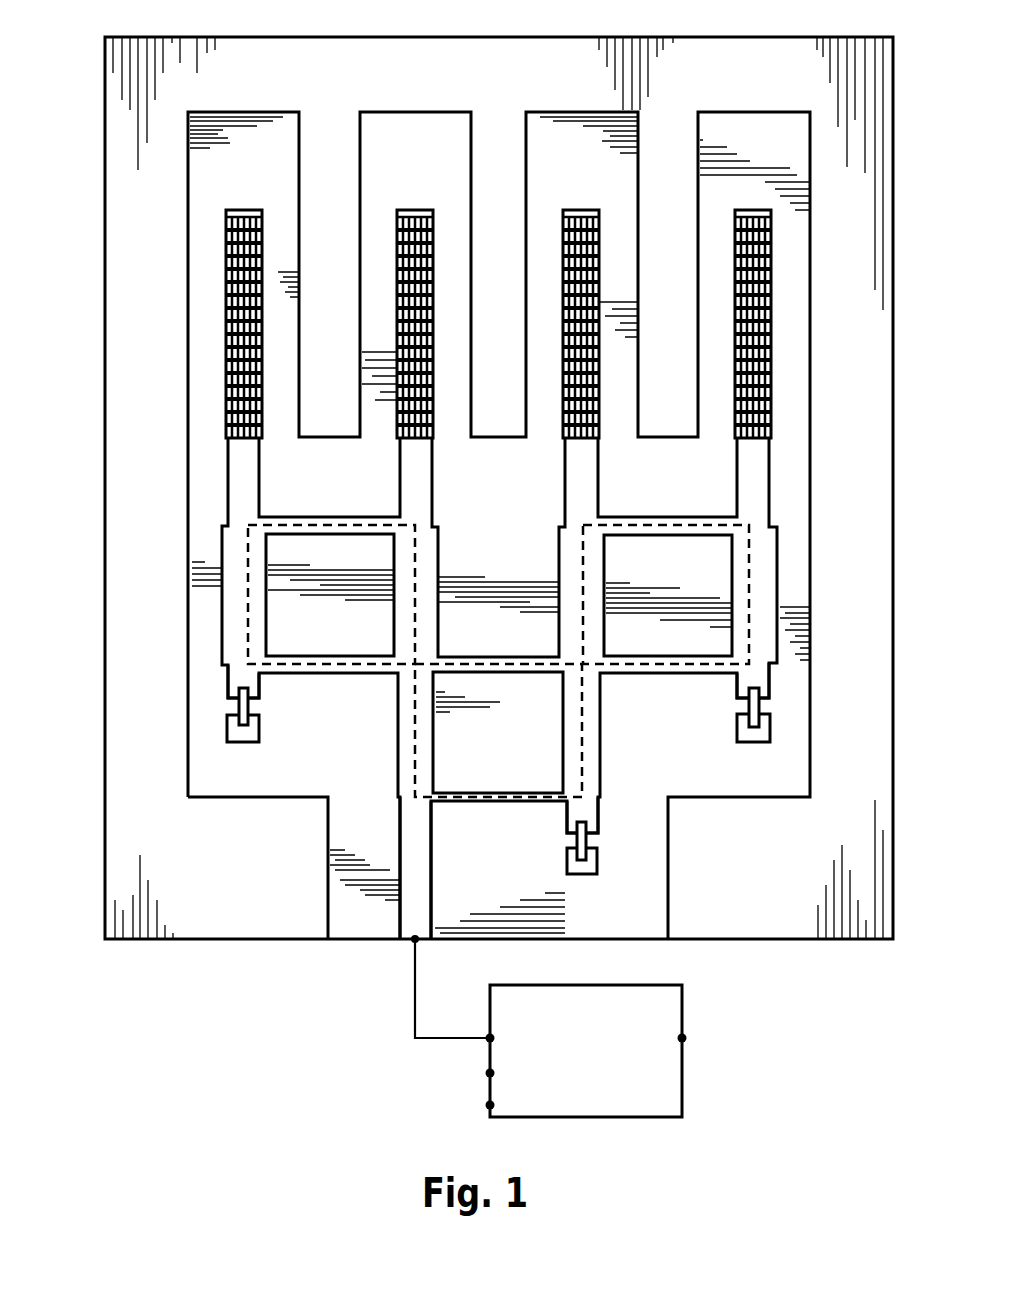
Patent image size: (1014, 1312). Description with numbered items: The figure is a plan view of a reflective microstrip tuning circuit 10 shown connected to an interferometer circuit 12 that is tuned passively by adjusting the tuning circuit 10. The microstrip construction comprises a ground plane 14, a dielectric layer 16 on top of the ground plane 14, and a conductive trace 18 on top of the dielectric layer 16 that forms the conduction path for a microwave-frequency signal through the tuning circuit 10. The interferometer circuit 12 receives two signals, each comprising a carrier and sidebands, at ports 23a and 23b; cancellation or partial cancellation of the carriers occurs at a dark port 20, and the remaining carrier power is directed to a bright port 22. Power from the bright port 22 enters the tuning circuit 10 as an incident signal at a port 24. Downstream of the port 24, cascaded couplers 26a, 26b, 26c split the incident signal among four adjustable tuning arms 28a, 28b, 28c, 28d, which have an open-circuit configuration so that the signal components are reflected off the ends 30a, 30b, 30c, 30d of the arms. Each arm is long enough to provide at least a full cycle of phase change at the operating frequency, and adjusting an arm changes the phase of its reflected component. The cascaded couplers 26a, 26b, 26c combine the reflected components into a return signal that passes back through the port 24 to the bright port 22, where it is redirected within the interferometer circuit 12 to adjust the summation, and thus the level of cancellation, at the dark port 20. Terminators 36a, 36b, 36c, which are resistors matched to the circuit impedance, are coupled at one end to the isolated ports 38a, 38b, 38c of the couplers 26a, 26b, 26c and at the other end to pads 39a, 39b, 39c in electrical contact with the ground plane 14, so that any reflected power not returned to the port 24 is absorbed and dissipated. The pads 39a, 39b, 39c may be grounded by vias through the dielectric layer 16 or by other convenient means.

The reflective microstrip tuning circuit 10 is at (74, 74).
The interferometer circuit 12 is at (572, 1052).
The ground plane 14 is at (120, 768).
The dielectric layer 16 is at (240, 795).
The conductive trace 18 is at (392, 872).
The dark port 20 is at (683, 1038).
The bright port 22 is at (488, 1040).
The port 23a is at (490, 1073).
The port 23b is at (490, 1105).
The port 24 is at (415, 944).
The cascaded coupler 26a is at (601, 748).
The cascaded coupler 26b is at (233, 597).
The cascaded coupler 26c is at (766, 598).
The adjustable tuning arm 28a is at (411, 190).
The adjustable tuning arm 28b is at (243, 190).
The adjustable tuning arm 28c is at (582, 190).
The adjustable tuning arm 28d is at (752, 190).
The end of tuning arm 30a is at (403, 208).
The end of tuning arm 30b is at (233, 208).
The end of tuning arm 30c is at (573, 208).
The end of tuning arm 30d is at (745, 208).
The terminator 36a is at (587, 842).
The terminator 36b is at (235, 707).
The terminator 36c is at (762, 708).
The isolated port 38a is at (583, 812).
The isolated port 38b is at (243, 680).
The isolated port 38c is at (753, 680).
The pad 39a is at (592, 868).
The pad 39b is at (240, 735).
The pad 39c is at (765, 738).